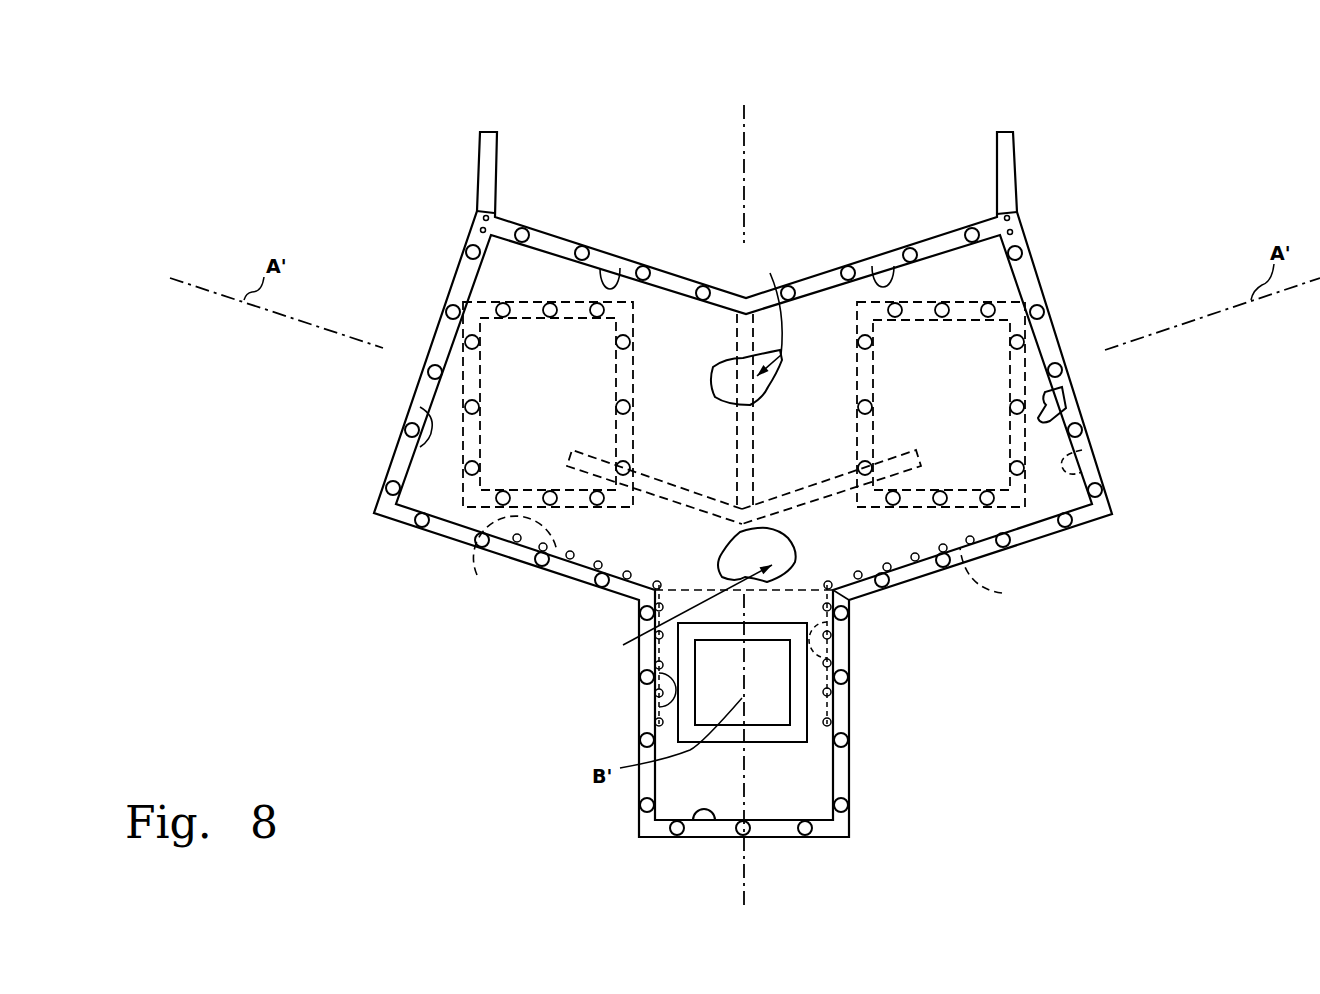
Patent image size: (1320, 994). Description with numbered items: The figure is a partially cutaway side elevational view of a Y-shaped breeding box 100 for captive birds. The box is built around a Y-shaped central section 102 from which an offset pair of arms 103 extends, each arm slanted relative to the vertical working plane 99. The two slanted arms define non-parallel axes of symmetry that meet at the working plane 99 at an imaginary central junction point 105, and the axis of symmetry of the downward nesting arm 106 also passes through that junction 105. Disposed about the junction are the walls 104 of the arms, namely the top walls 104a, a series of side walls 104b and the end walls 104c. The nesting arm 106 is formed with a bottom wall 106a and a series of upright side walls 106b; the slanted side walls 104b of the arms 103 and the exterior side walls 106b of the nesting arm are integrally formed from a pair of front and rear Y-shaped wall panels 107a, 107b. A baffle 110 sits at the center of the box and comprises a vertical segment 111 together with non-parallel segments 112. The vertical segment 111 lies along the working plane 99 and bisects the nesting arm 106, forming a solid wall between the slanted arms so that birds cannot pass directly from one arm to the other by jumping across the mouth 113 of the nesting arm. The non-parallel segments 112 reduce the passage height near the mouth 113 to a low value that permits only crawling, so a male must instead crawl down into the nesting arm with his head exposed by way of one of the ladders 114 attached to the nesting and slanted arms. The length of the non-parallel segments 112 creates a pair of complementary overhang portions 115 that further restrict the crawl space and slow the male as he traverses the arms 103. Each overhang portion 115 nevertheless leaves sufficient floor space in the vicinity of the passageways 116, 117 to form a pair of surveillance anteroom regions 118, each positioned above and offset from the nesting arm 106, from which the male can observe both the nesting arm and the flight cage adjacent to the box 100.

The working plane 99 is at (748, 150).
The Y-shaped breeding box 100 is at (968, 98).
The Y-shaped central section 102 is at (952, 275).
The offset pair of arms 103 is at (443, 525).
The walls of the arms 104 is at (873, 268).
The top walls 104a is at (620, 268).
The side walls 104b is at (595, 555).
The end walls 104c is at (420, 447).
The central junction point 105 is at (750, 461).
The nesting arm 106 is at (810, 768).
The bottom wall 106a is at (714, 826).
The side walls of the nesting arm 106b is at (655, 703).
The front Y-shaped wall panel 107a is at (688, 592).
The rear Y-shaped wall panel 107b is at (666, 614).
The baffle 110 is at (770, 314).
The vertical segment 111 is at (730, 377).
The non-parallel segments 112 is at (703, 491).
The mouth 113 is at (851, 597).
The ladders 114 is at (477, 575).
The overhang portions 115 is at (887, 520).
The passageway 116 is at (973, 347).
The passageway 117 is at (503, 353).
The surveillance anteroom regions 118 is at (1053, 404).